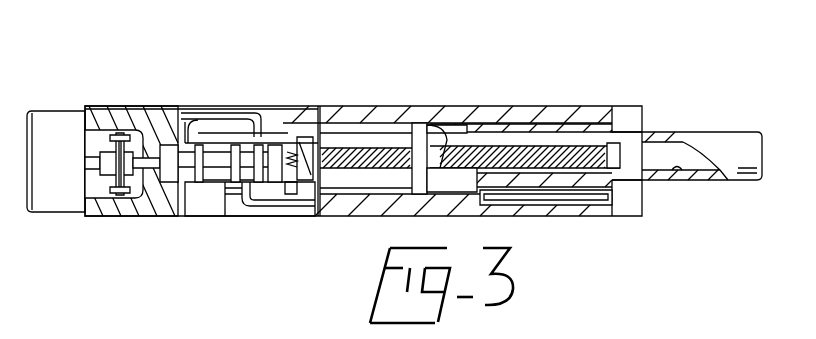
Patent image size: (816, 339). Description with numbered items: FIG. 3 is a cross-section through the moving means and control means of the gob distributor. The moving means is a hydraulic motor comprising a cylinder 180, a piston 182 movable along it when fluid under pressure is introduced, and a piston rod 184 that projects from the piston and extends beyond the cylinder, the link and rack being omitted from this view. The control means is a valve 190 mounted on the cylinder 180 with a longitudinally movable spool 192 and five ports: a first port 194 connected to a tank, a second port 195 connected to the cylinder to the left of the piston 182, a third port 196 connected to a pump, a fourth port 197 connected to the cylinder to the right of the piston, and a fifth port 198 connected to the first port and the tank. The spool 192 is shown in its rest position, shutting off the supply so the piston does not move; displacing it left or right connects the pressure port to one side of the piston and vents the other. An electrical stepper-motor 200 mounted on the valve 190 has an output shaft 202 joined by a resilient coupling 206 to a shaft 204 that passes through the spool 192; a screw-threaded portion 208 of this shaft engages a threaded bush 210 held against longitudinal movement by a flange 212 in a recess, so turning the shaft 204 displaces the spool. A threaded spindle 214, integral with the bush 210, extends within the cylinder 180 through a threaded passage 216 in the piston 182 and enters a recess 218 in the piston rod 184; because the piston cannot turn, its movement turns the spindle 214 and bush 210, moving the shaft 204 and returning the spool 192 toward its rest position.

The cylinder 180 is at (385, 106).
The piston 182 is at (433, 106).
The piston rod 184 is at (727, 143).
The valve 190 is at (230, 108).
The spool 192 is at (185, 185).
The first port 194 is at (165, 108).
The second port 195 is at (203, 108).
The third port 196 is at (228, 212).
The fourth port 197 is at (268, 218).
The fifth port 198 is at (277, 140).
The electrical stepper-motor 200 is at (52, 202).
The output shaft 202 is at (70, 108).
The shaft 204 is at (140, 190).
The resilient coupling 206 is at (111, 108).
The screw-threaded portion 208 is at (297, 215).
The threaded bush 210 is at (295, 145).
The flange 212 is at (300, 170).
The threaded spindle 214 is at (560, 153).
The threaded passage 216 is at (478, 167).
The recess 218 is at (682, 182).